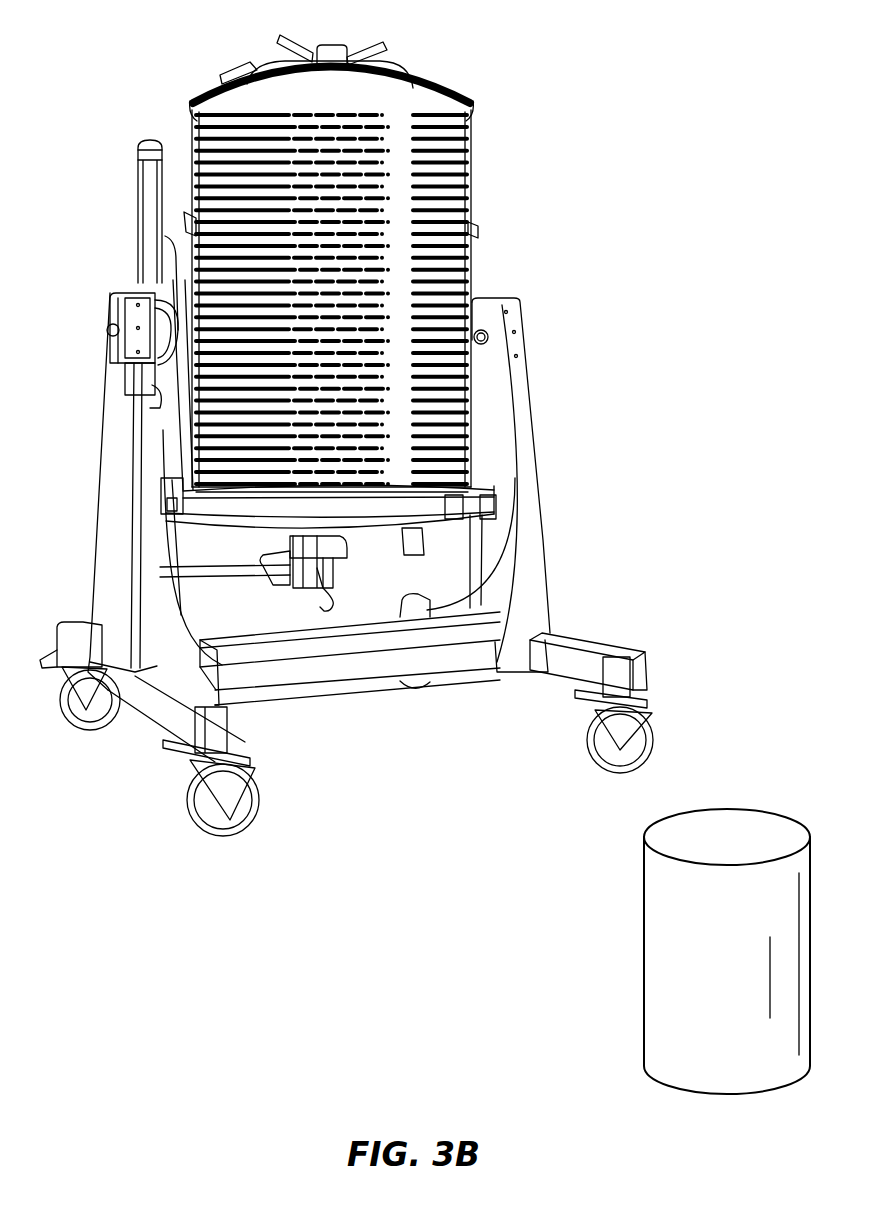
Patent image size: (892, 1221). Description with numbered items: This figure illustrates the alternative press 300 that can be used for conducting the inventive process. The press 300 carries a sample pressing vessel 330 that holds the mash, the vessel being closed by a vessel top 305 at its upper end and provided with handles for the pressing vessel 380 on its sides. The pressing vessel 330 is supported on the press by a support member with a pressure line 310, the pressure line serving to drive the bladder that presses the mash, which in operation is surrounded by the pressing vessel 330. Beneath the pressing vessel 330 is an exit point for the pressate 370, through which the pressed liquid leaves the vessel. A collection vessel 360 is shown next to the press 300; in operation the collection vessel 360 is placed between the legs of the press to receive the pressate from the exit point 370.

The press 300 is at (50, 1104).
The vessel top 305 is at (398, 67).
The sample pressing vessel 330 is at (471, 161).
The handles for the pressing vessel 380 is at (185, 220).
The support member with a pressure line 310 is at (110, 378).
The exit point for the pressate 370 is at (320, 607).
The collection vessel 360 is at (738, 806).